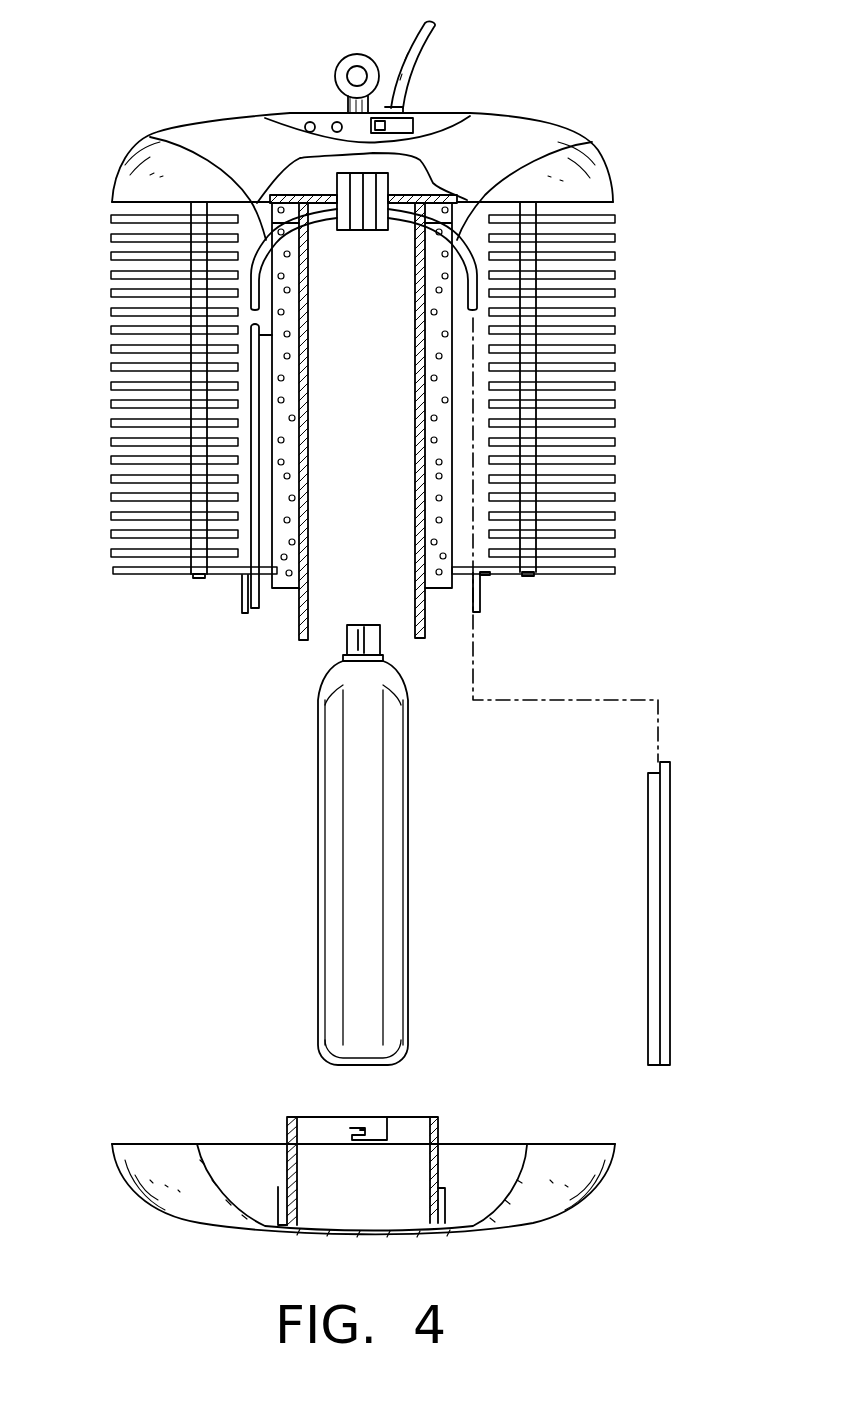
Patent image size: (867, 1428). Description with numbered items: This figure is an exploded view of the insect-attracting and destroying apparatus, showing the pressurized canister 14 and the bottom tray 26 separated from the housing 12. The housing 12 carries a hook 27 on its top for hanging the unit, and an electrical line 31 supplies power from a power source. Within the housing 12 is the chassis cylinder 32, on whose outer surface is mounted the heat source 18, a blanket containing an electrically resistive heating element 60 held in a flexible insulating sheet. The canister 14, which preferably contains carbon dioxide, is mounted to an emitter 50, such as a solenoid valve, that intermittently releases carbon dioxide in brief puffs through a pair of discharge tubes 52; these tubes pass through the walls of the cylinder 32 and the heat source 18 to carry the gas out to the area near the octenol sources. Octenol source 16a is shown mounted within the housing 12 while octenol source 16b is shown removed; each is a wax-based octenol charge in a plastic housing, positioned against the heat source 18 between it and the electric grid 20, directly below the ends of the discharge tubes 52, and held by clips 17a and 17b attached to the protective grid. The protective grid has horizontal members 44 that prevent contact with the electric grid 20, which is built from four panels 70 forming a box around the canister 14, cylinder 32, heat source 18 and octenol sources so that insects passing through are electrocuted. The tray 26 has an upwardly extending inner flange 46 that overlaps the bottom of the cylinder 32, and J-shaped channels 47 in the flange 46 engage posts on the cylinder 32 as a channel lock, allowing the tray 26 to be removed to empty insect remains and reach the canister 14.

The housing 12 is at (196, 114).
The pressurized canister 14 is at (320, 806).
The octenol source 16a is at (255, 494).
The octenol source 16b is at (668, 856).
The clip 17a is at (246, 597).
The clip 17b is at (481, 598).
The heat source 18 is at (470, 399).
The electric grid 20 is at (548, 466).
The bottom tray 26 is at (577, 1177).
The hook 27 is at (345, 68).
The electrical line 31 is at (408, 30).
The cylinder 32 is at (417, 338).
The horizontal members 44 is at (615, 217).
The inner flange 46 is at (440, 1133).
The J-shaped channel 47 is at (382, 1125).
The emitter 50 is at (385, 183).
The discharge tubes 52 is at (150, 138).
The heating element 60 is at (283, 560).
The panel 70 is at (198, 376).